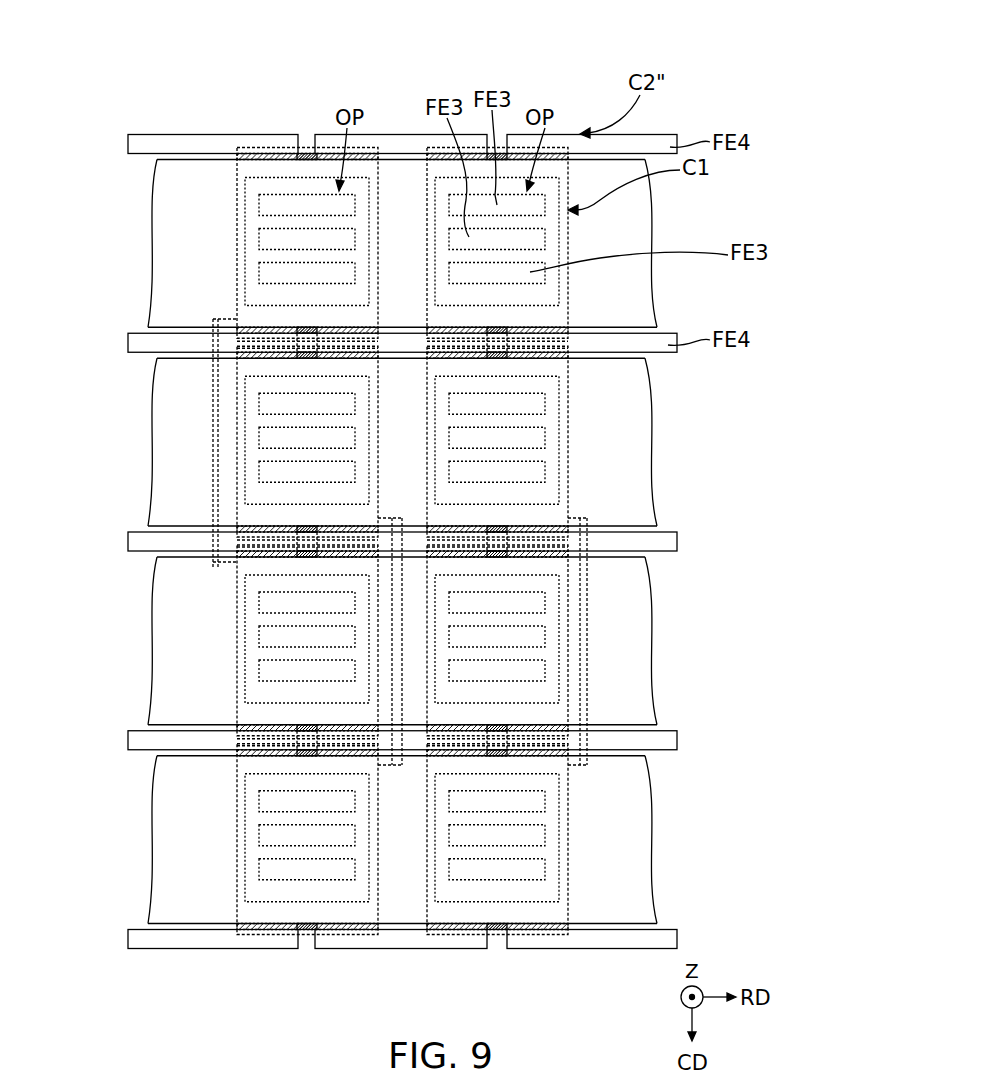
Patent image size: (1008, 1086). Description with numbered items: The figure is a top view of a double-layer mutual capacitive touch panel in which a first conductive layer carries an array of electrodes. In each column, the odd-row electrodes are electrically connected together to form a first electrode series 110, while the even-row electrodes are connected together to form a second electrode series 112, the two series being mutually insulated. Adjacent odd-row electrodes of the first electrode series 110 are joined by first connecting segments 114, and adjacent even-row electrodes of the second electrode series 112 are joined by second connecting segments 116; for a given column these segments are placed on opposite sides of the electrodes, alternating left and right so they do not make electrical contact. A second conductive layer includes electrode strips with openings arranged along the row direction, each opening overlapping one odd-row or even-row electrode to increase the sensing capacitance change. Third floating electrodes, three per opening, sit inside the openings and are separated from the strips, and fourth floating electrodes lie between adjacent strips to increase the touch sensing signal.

The first electrode series 110 is at (286, 168).
The second electrode series 112 is at (246, 363).
The first connecting segment 114 is at (213, 440).
The second connecting segment 116 is at (398, 690).